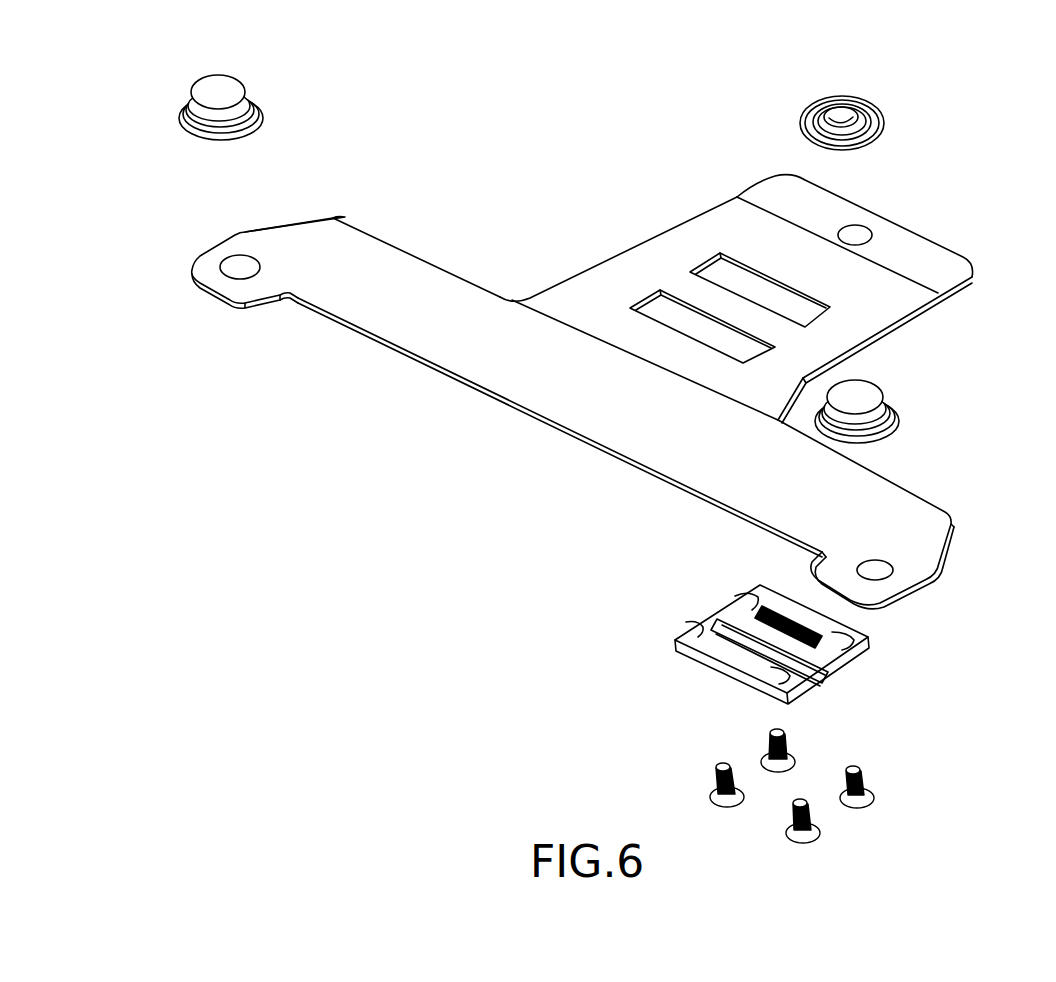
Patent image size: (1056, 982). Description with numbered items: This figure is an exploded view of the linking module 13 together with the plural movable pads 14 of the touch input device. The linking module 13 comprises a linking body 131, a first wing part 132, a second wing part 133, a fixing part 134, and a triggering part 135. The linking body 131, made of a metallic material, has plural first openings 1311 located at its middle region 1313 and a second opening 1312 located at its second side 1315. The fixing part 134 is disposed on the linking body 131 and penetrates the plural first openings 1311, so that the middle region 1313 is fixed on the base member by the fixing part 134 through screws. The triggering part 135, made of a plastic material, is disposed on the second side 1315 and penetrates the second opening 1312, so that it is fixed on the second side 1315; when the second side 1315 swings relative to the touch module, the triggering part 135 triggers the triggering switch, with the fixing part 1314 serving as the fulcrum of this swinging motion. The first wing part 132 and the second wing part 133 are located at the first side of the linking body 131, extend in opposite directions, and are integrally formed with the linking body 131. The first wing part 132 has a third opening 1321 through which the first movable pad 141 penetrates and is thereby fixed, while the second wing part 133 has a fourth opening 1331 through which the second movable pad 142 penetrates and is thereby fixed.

The linking module 13 is at (702, 198).
The linking body 131 is at (588, 302).
The first openings 1311 is at (738, 285).
The middle region 1313 is at (673, 280).
The second opening 1312 is at (865, 223).
The second side 1315 is at (940, 263).
The fixing part 1314 is at (567, 405).
The first wing part 132 is at (908, 513).
The third opening 1321 is at (888, 575).
The second wing part 133 is at (342, 245).
The fourth opening 1331 is at (233, 262).
The fixing part 134 is at (737, 658).
The triggering part 135 is at (855, 223).
The movable pads 14 is at (581, 305).
The first movable pad 141 is at (875, 570).
The second movable pad 142 is at (238, 270).